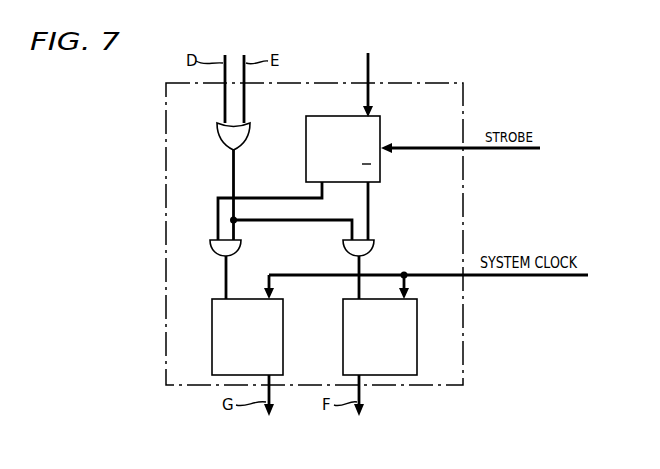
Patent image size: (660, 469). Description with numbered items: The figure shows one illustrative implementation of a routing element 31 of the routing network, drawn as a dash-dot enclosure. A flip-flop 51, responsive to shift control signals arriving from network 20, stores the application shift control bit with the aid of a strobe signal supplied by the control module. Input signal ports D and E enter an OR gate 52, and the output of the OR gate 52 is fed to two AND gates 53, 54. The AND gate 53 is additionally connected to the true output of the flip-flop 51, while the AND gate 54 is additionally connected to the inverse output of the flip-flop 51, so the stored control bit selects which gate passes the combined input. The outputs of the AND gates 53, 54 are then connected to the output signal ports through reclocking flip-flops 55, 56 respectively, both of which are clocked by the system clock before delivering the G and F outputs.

The network 20 is at (370, 59).
The routing element 31 is at (466, 91).
The flip-flop 51 is at (323, 116).
The OR gate 52 is at (242, 181).
The AND gate 53 is at (234, 269).
The AND gate 54 is at (367, 269).
The reclocking flip-flop 55 is at (283, 327).
The reclocking flip-flop 56 is at (417, 327).